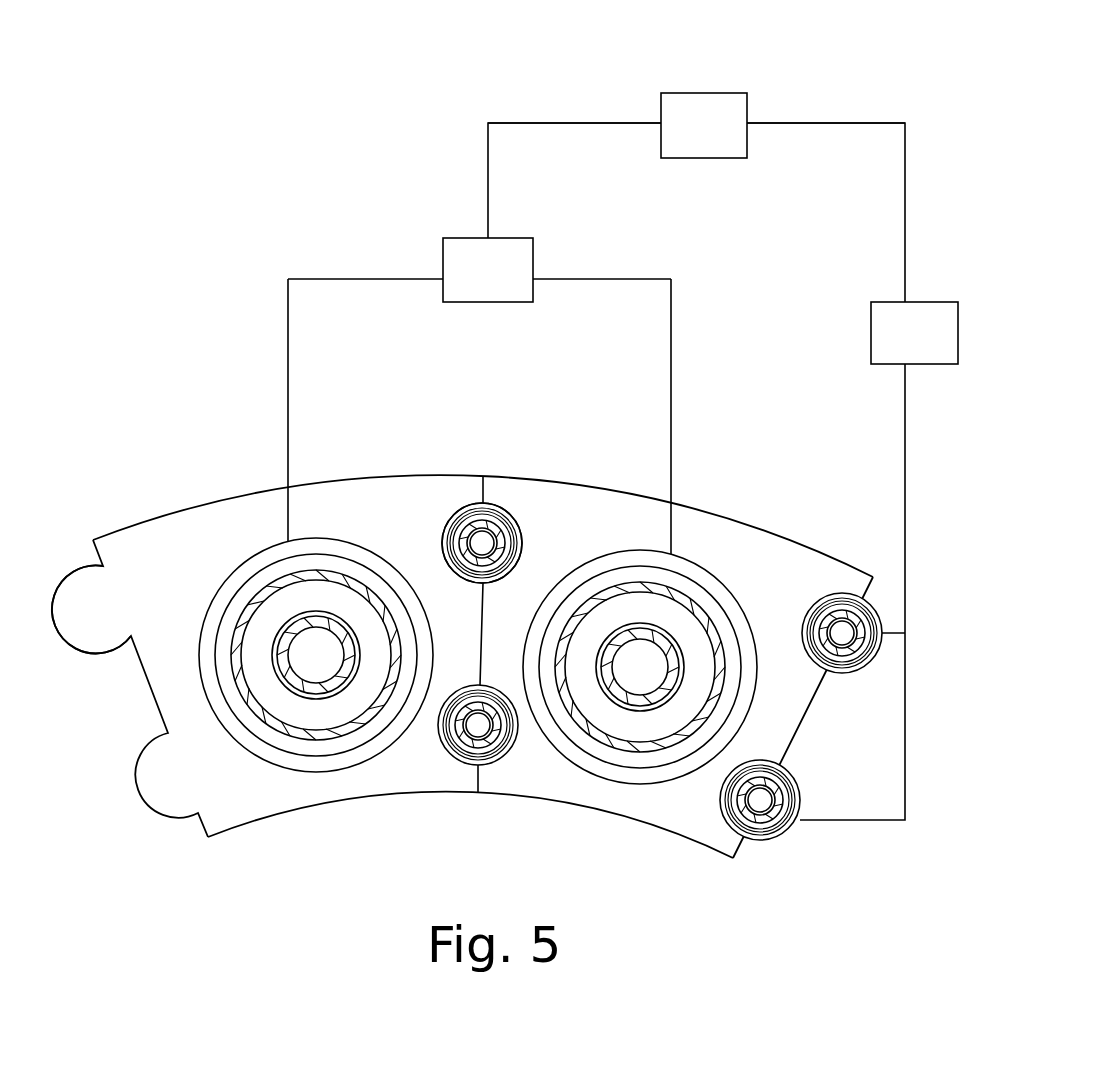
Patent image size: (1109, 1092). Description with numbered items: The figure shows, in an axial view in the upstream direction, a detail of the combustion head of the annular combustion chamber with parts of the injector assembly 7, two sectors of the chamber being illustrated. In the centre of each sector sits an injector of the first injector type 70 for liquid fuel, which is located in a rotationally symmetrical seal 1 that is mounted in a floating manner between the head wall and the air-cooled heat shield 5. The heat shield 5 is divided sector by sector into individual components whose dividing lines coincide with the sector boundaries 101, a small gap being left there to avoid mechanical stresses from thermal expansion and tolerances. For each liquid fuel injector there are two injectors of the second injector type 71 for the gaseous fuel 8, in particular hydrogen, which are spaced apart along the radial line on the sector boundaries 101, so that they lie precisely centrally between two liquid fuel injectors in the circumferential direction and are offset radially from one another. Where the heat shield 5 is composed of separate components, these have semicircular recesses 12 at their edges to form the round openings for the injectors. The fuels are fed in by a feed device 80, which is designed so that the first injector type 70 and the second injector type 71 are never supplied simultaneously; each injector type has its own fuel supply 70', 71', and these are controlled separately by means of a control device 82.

The feed device 80 is at (810, 105).
The control device 82 is at (704, 125).
The fuel supply 70' is at (479, 338).
The fuel supply 71' is at (852, 471).
The seal 1 is at (250, 572).
The heat shield 5 is at (350, 517).
The sector boundaries 101 is at (483, 490).
The gaseous fuel 8 is at (480, 547).
The second injector type 71 is at (538, 500).
The semicircular recesses 12 is at (132, 602).
The first injector type 70 is at (211, 687).
The injector assembly 7 is at (412, 773).